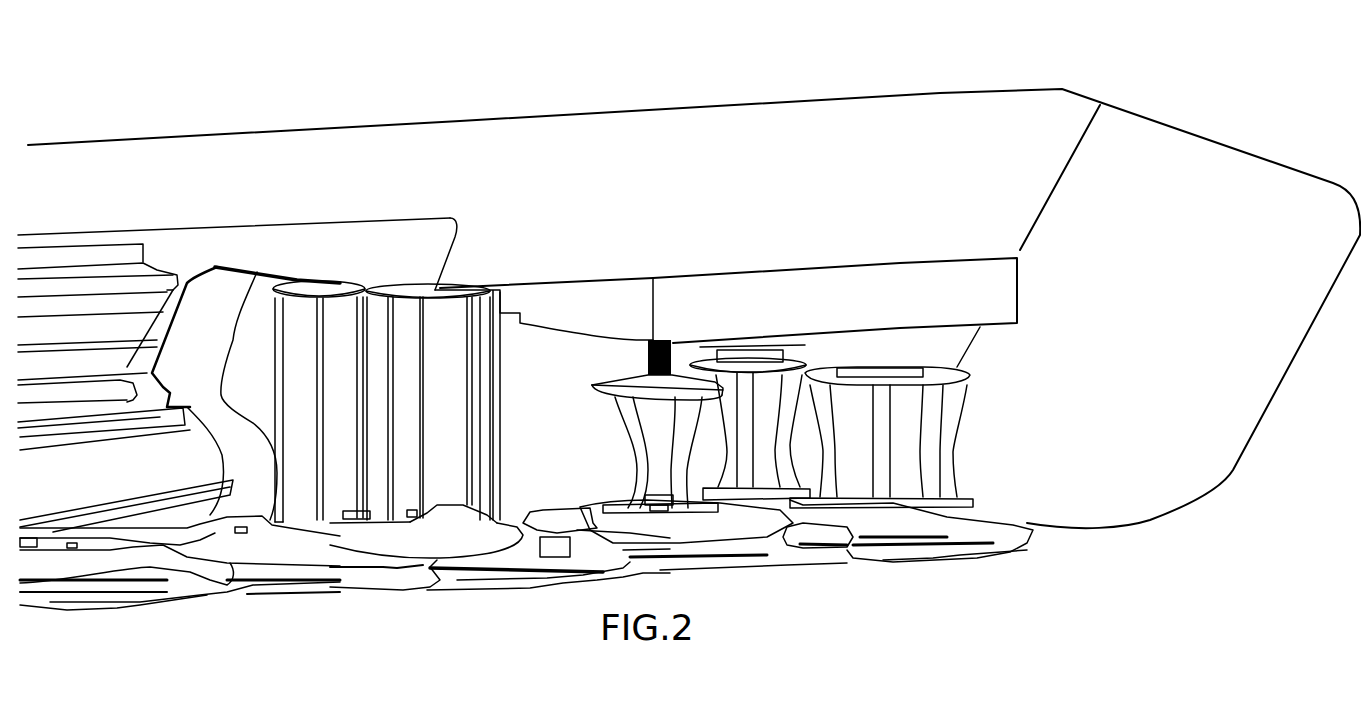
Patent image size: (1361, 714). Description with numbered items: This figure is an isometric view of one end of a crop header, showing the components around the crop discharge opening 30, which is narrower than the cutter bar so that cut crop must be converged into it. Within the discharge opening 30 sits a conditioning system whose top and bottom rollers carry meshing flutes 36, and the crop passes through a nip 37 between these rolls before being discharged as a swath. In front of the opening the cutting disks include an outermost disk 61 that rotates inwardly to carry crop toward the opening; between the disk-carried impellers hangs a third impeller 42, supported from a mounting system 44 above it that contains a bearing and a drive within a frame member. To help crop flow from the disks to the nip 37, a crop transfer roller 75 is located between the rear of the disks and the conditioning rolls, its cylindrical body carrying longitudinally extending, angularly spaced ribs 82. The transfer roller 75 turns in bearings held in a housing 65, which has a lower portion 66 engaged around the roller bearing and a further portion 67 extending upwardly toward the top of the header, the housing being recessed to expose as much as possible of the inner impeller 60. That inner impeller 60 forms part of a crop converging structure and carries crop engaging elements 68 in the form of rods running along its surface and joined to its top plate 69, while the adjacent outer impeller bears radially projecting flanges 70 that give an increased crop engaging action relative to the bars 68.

The discharge opening 30 is at (177, 247).
The flutes 36 is at (104, 287).
The nip 37 is at (170, 293).
The third impeller 42 is at (790, 393).
The mounting system 44 is at (750, 353).
The inner impeller 60 is at (370, 291).
The outer disk 61 is at (460, 287).
The housing 65 is at (260, 275).
The lower portion 66 is at (207, 603).
The further portion 67 is at (220, 337).
The crop engaging elements 68 is at (320, 358).
The top plate 69 is at (360, 293).
The flanges 70 is at (403, 382).
The crop transfer roller 75 is at (187, 443).
The ribs 82 is at (108, 513).